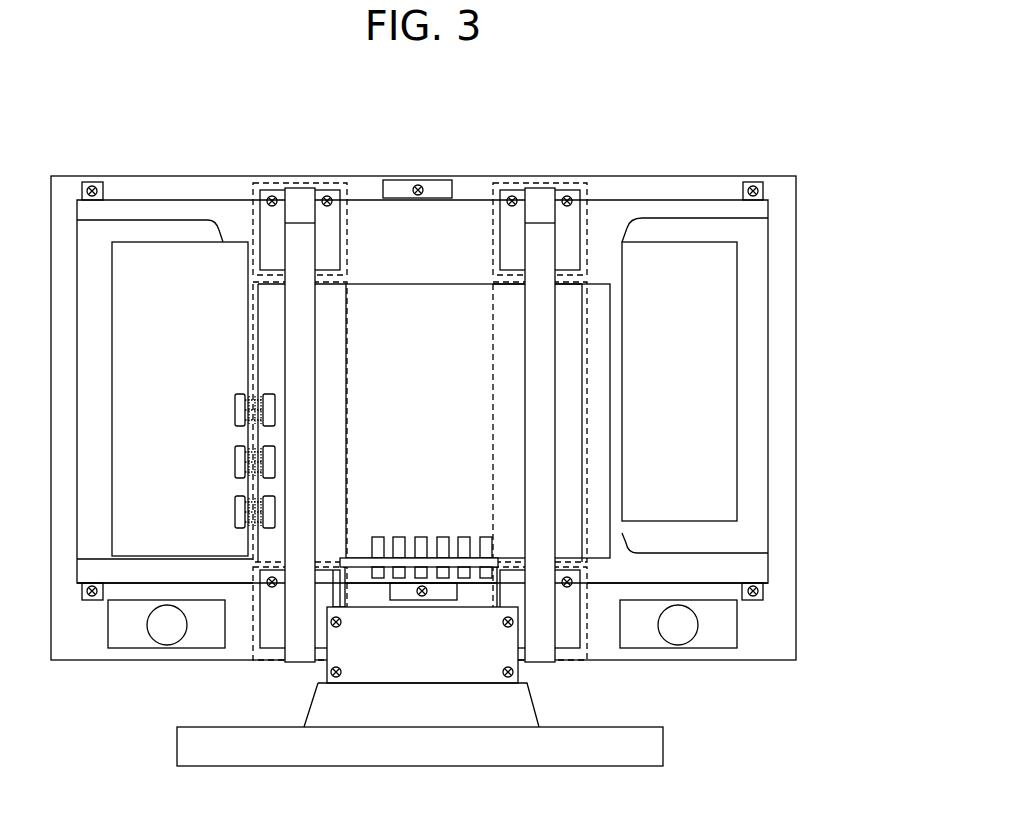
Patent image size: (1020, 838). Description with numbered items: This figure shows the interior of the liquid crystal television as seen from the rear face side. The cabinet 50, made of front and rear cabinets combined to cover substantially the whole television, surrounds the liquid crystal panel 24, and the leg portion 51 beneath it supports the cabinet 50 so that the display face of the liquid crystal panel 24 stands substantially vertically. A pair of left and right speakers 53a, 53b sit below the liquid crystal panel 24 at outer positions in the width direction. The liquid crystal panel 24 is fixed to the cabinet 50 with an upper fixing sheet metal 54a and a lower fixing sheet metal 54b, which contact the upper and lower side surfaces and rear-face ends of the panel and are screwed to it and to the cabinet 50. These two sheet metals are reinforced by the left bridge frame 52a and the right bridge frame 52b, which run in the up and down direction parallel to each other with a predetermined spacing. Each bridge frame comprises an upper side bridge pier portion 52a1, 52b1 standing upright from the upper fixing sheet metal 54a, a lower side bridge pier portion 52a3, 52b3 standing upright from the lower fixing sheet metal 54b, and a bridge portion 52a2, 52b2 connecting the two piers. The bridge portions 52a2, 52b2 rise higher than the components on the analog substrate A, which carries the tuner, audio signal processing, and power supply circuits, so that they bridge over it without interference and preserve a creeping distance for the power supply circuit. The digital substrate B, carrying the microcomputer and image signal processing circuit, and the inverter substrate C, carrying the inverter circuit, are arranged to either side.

The liquid crystal panel 24 is at (768, 335).
The cabinet 50 is at (796, 427).
The leg portion 51 is at (663, 745).
The left bridge frame 52a is at (535, 240).
The upper side bridge pier portion 52a1 is at (588, 215).
The bridge portion 52a2 is at (494, 283).
The lower side bridge pier portion 52a3 is at (567, 660).
The right bridge frame 52b is at (298, 242).
The upper side bridge pier portion 52b1 is at (256, 183).
The bridge portion 52b2 is at (253, 317).
The lower side bridge pier portion 52b3 is at (260, 657).
The speaker 53a is at (737, 627).
The speaker 53b is at (128, 650).
The upper fixing sheet metal 54a is at (642, 212).
The lower fixing sheet metal 54b is at (768, 570).
The analog substrate A is at (410, 283).
The digital substrate B is at (185, 240).
The inverter substrate C is at (688, 240).